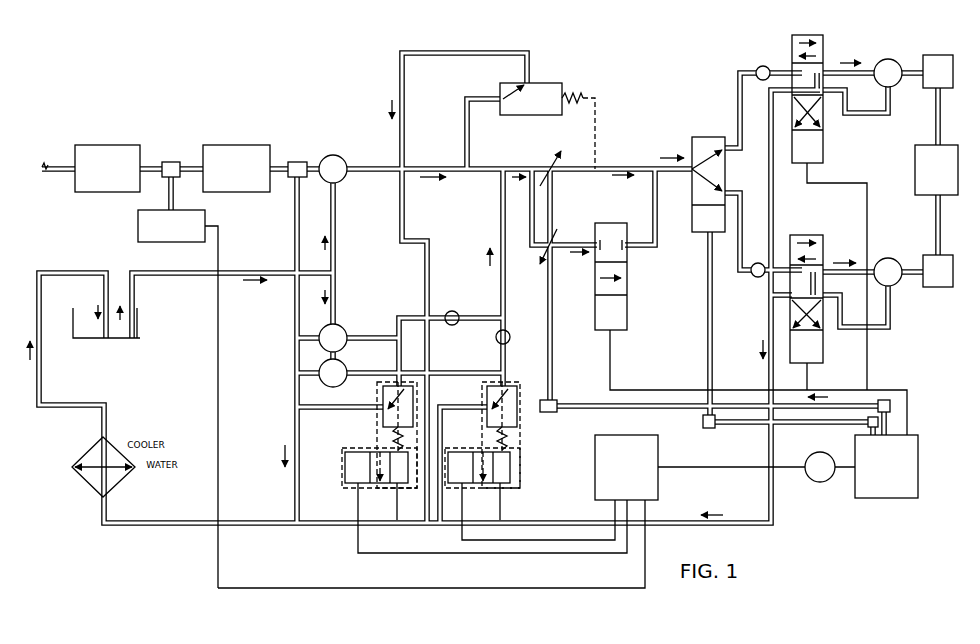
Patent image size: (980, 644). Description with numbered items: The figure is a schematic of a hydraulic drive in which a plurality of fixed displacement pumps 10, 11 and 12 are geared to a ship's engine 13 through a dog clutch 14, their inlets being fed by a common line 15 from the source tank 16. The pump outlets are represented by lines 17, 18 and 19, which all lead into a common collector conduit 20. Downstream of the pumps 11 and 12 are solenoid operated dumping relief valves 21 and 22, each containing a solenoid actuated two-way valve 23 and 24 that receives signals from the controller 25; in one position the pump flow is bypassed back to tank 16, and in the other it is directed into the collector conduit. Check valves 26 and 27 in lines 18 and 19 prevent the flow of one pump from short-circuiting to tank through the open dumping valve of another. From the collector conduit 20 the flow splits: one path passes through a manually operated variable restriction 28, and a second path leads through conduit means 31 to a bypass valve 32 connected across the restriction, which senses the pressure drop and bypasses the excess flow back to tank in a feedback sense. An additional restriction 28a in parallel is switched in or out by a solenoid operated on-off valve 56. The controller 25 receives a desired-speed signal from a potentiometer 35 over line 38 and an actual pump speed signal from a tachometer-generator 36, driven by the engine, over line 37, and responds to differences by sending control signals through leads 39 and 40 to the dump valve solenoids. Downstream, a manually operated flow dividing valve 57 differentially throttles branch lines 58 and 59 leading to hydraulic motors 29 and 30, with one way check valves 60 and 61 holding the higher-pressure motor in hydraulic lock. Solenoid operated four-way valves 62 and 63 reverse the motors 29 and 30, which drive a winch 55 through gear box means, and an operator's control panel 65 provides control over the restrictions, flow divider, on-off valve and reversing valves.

The fixed displacement pump 10 is at (341, 180).
The fixed displacement pump 11 is at (343, 326).
The fixed displacement pump 12 is at (345, 364).
The ship's engine 13 is at (140, 152).
The dog clutch 14 is at (262, 146).
The common line 15 is at (237, 272).
The source tank 16 is at (120, 327).
The outlet line 17 is at (413, 171).
The outlet line 18 is at (404, 318).
The outlet line 19 is at (447, 372).
The collector conduit 20 is at (512, 166).
The dumping relief valve 21 is at (381, 423).
The dumping relief valve 22 is at (522, 411).
The solenoid actuated two-way valve 23 is at (347, 452).
The solenoid actuated two-way valve 24 is at (510, 468).
The controller 25 is at (658, 448).
The check valve 26 is at (458, 313).
The check valve 27 is at (511, 337).
The manually operated variable restriction 28 is at (558, 179).
The additional M.O.R. 28a is at (550, 239).
The hydraulic motor 29 is at (889, 59).
The hydraulic motor 30 is at (890, 258).
The conduit means 31 is at (471, 116).
The bypass valve 32 is at (500, 91).
The potentiometer 35 is at (818, 482).
The tachometer-generator 36 is at (205, 222).
The line 37 is at (392, 588).
The line 38 is at (722, 462).
The electrical lead 39 is at (557, 553).
The electrical lead 40 is at (526, 541).
The winch 55 is at (915, 168).
The solenoid operated on-off valve 56 is at (627, 308).
The manually operated flow dividing valve 57 is at (725, 165).
The branch line 58 is at (741, 118).
The branch line 59 is at (742, 210).
The one way check valve 60 is at (765, 66).
The one way check valve 61 is at (758, 278).
The solenoid operated four-way valve 62 is at (823, 58).
The solenoid operated four-way valve 63 is at (807, 235).
The operator's control panel 65 is at (918, 470).